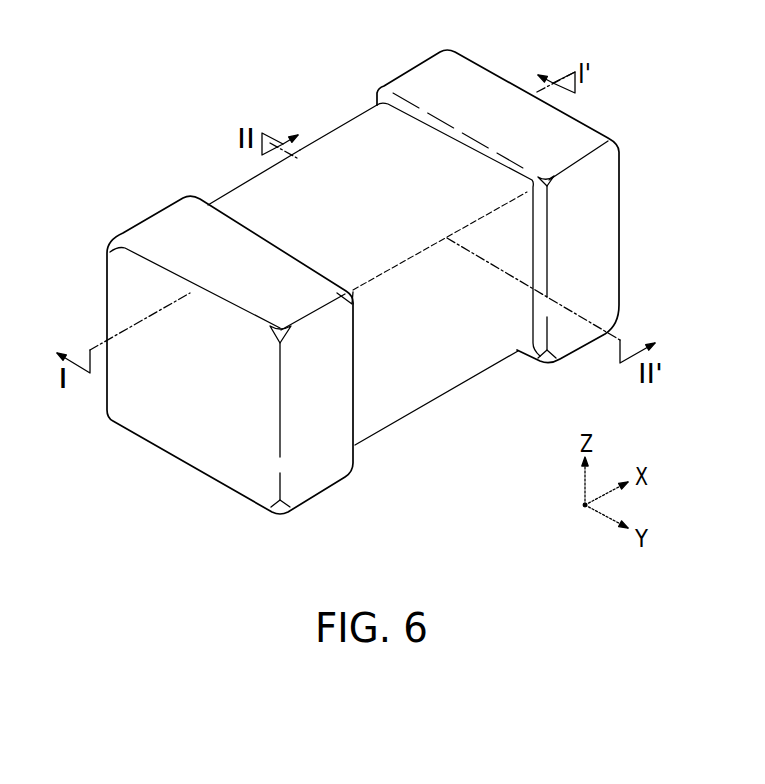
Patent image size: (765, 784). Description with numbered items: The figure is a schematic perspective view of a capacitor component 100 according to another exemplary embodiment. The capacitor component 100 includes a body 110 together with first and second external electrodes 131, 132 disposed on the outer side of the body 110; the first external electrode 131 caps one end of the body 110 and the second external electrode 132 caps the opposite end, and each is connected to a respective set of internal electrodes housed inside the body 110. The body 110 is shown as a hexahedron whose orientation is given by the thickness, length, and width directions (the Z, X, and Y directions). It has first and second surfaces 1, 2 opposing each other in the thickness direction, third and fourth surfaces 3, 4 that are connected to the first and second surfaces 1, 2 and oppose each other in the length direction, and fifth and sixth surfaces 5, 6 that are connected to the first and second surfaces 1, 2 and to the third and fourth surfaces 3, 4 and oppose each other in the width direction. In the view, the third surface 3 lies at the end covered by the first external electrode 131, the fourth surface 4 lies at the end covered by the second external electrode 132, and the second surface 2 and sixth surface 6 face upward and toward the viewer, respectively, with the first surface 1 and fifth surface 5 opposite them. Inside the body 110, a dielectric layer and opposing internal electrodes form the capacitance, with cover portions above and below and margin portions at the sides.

The capacitor component 100 is at (165, 57).
The body 110 is at (242, 207).
The first external electrode 131 is at (165, 228).
The second external electrode 132 is at (422, 83).
The first surface 1 is at (404, 368).
The second surface 2 is at (392, 165).
The third surface 3 is at (197, 417).
The fourth surface 4 is at (570, 220).
The fifth surface 5 is at (460, 338).
The sixth surface 6 is at (338, 183).